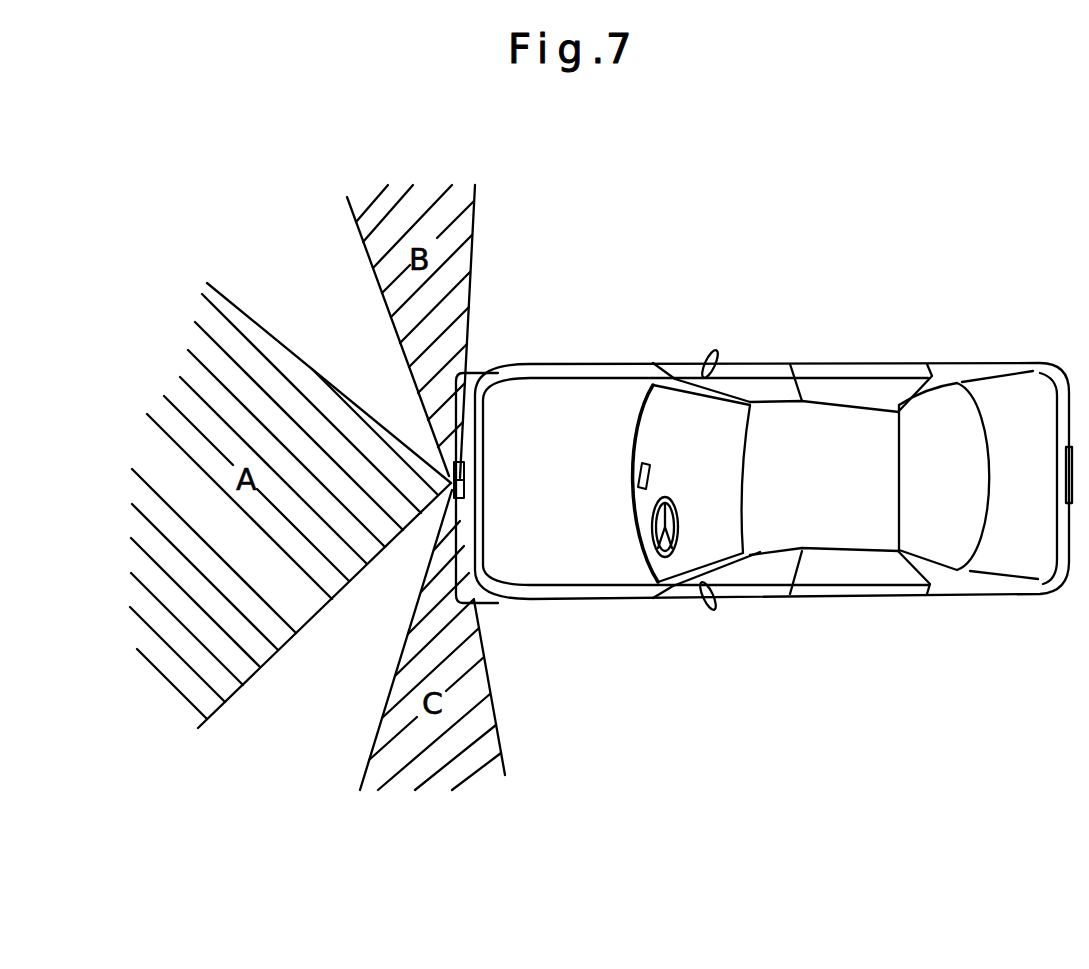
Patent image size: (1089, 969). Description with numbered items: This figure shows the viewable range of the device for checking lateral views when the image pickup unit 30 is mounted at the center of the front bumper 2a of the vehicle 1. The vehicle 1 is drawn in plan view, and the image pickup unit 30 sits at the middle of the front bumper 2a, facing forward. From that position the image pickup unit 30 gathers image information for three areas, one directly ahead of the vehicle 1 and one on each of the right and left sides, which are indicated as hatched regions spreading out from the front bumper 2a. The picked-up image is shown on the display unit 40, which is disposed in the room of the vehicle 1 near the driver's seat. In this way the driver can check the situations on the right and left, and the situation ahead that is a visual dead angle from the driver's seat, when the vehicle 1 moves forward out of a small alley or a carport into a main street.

The vehicle 1 is at (788, 364).
The front bumper 2a is at (475, 373).
The image pickup unit 30 is at (470, 480).
The display unit 40 is at (650, 478).